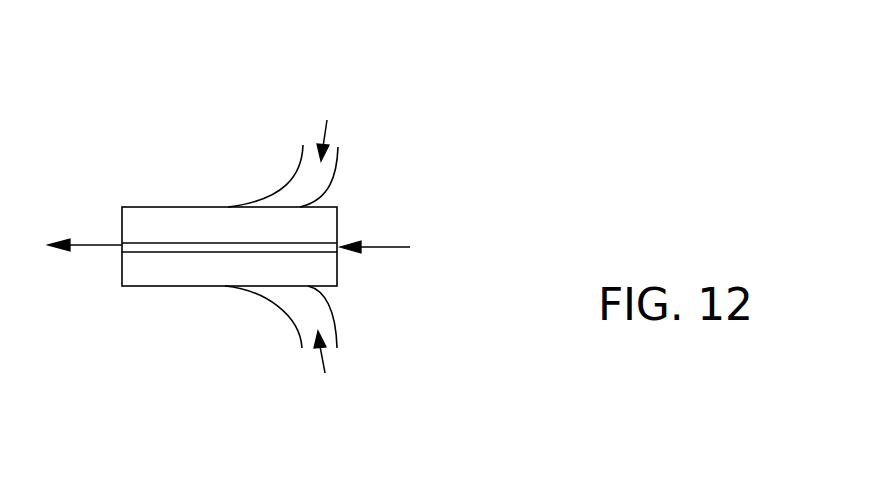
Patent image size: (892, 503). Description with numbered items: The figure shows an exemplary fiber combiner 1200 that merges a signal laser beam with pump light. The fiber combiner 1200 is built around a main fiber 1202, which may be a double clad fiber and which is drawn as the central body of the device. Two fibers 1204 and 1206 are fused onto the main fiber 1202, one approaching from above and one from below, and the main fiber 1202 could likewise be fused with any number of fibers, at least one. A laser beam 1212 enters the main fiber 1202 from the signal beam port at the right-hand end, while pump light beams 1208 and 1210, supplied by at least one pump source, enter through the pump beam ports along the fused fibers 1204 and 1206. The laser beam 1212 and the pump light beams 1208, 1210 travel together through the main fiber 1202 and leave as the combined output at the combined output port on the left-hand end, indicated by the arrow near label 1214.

The fiber combiner 1200 is at (175, 78).
The main fiber 1202 is at (150, 207).
The fiber 1204 is at (335, 325).
The fiber 1206 is at (335, 167).
The pump light beam 1208 is at (325, 373).
The pump light beam 1210 is at (327, 123).
The laser beam 1212 is at (392, 245).
The combined output beam 1214 is at (103, 248).